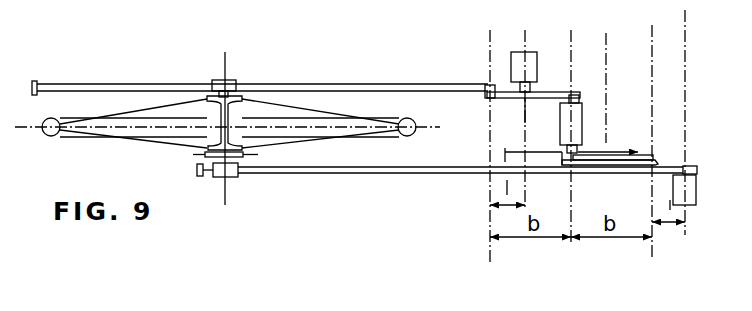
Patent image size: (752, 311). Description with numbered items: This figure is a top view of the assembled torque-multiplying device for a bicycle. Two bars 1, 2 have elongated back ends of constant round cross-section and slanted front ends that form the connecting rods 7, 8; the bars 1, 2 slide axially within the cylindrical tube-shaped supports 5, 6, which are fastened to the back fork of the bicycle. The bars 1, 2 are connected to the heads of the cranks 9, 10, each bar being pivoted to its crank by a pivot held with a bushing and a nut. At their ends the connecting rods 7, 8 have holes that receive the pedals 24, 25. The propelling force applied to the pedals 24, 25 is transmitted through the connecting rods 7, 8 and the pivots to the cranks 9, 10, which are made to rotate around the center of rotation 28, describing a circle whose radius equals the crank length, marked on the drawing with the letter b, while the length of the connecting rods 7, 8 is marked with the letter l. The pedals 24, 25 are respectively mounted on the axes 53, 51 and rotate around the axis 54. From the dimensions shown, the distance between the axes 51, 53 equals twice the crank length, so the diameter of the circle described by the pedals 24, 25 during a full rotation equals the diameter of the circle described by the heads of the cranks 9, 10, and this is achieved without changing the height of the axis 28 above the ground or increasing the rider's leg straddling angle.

The bar 1 is at (298, 83).
The bar 2 is at (397, 173).
The cylindrical tube-shaped support 5 is at (220, 83).
The cylindrical tube-shaped support 6 is at (228, 173).
The connecting rod 7 is at (508, 88).
The connecting rod 8 is at (672, 168).
The crank 9 is at (547, 95).
The crank 10 is at (617, 157).
The pedal 24 is at (692, 192).
The pedal 25 is at (517, 62).
The center of rotation 28 is at (575, 68).
The axis 51 is at (687, 63).
The axis 53 is at (525, 111).
The axis 54 is at (608, 70).